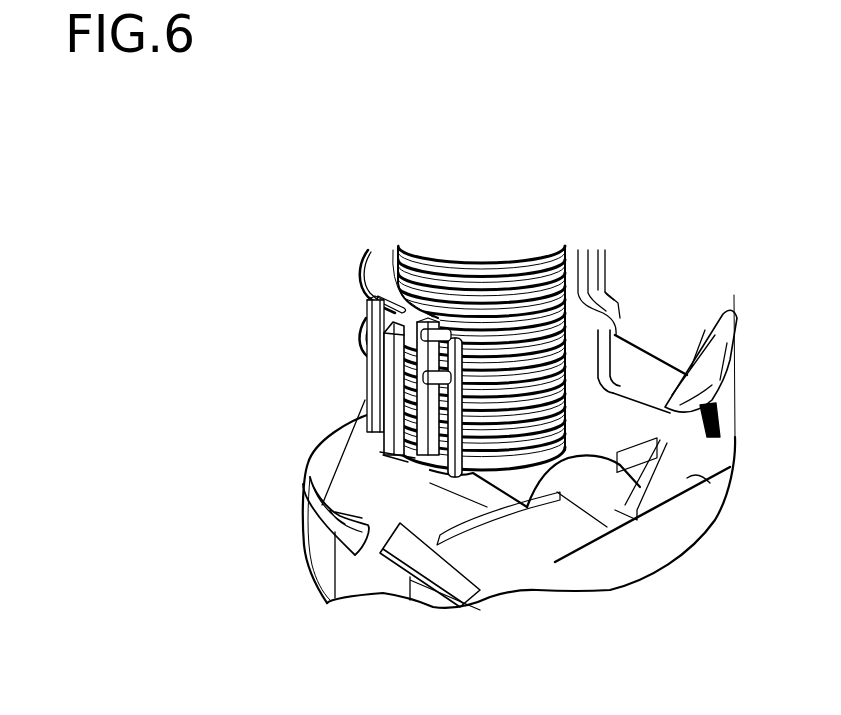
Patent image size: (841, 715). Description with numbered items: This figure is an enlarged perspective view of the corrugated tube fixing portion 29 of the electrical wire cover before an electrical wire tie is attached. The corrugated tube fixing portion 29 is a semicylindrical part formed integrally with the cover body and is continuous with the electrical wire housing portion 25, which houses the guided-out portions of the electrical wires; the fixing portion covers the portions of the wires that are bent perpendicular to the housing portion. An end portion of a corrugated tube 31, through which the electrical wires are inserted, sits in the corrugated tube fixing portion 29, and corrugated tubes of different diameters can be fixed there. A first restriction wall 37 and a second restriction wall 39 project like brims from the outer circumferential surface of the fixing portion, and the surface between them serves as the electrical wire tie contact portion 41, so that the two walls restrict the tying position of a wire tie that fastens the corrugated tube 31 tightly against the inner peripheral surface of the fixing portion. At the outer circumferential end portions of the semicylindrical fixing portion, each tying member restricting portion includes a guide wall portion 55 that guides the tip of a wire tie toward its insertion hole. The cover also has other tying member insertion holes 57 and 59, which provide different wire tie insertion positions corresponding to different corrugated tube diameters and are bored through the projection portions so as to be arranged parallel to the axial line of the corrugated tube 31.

The electrical wire housing portion 25 is at (300, 582).
The corrugated tube fixing portion 29 is at (620, 260).
The corrugated tube 31 is at (527, 255).
The first restriction wall 37 is at (365, 262).
The second restriction wall 39 is at (360, 342).
The electrical wire tie contact portion 41 is at (370, 320).
The guide wall portion 55 is at (620, 340).
The tying member insertion hole 57 is at (372, 400).
The tying member insertion hole 59 is at (418, 455).